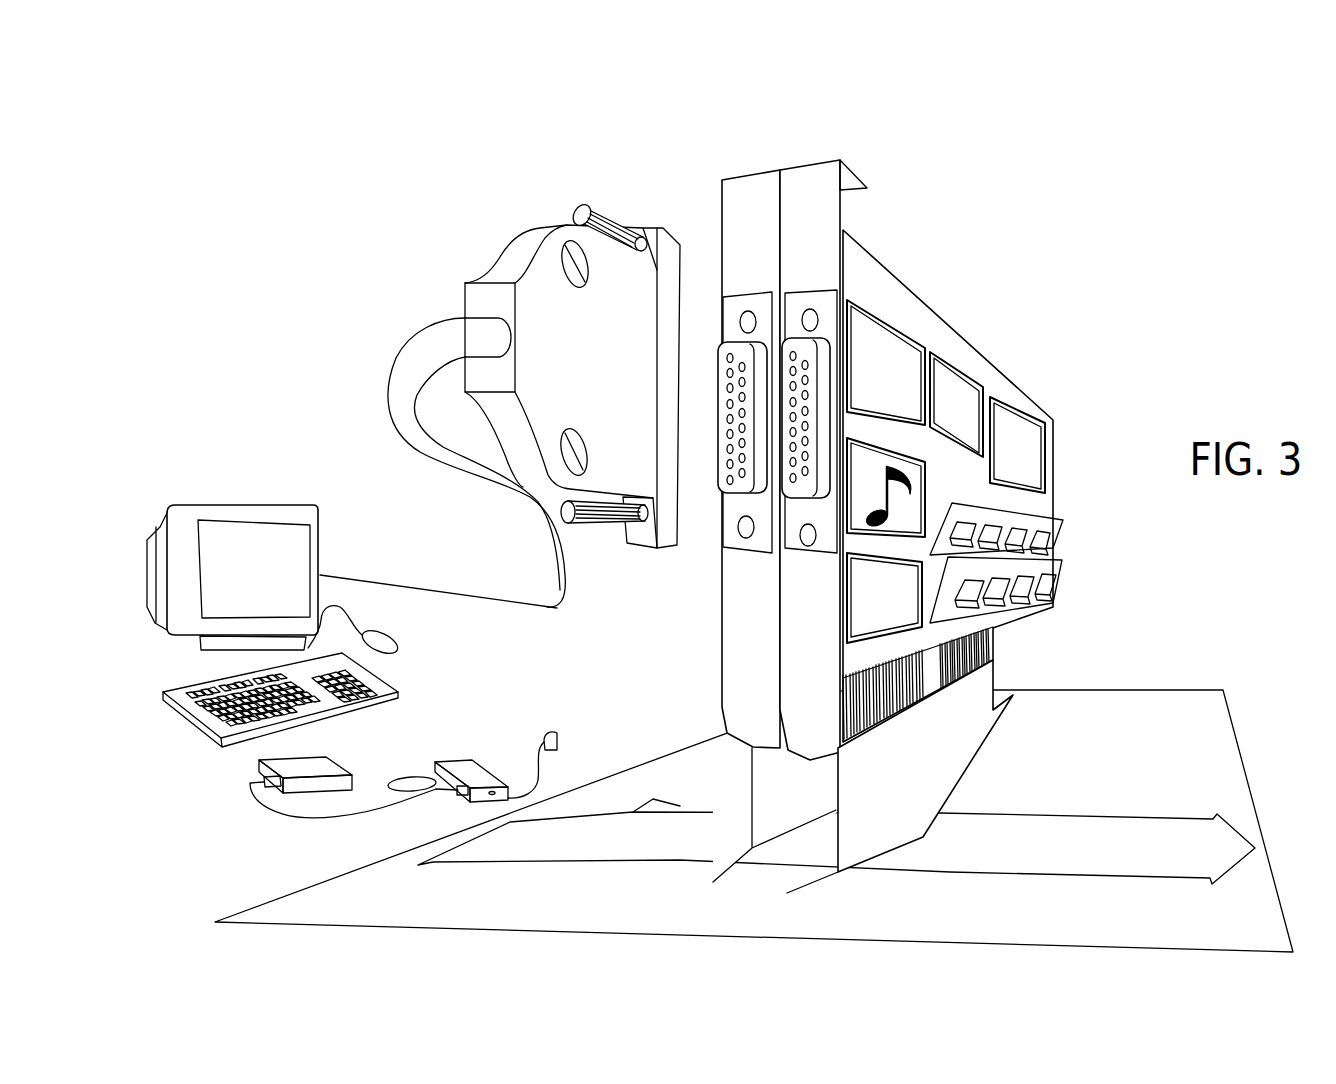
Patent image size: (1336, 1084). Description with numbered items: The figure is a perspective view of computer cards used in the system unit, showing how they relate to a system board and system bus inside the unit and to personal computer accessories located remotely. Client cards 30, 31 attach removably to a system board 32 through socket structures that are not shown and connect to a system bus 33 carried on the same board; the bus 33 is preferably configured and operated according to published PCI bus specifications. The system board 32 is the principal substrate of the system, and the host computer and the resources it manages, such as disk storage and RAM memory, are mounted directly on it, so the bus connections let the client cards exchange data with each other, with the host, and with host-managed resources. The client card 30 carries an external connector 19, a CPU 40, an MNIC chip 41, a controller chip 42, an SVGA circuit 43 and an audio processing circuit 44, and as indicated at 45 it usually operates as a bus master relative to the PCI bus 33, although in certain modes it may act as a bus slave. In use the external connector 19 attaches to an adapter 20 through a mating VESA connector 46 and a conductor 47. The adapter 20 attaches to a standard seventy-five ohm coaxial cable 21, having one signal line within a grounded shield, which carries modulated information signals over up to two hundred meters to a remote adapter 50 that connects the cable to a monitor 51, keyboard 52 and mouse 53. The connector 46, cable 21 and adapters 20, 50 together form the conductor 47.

The external connector 19 is at (800, 310).
The adapter 20 is at (460, 800).
The coaxial cable 21 is at (277, 810).
The client card 30 is at (817, 160).
The client card 31 is at (758, 173).
The system board 32 is at (1197, 710).
The system bus 33 is at (1067, 823).
The CPU 40 is at (1040, 443).
The MNIC chip 41 is at (852, 613).
The controller chip 42 is at (973, 387).
The SVGA circuit 43 is at (920, 353).
The audio processing circuit 44 is at (863, 503).
The bus master operation indication 45 is at (1022, 682).
The VESA connector 46 is at (557, 737).
The conductor 47 is at (403, 365).
The remote adapter 50 is at (323, 763).
The monitor 51 is at (256, 512).
The keyboard 52 is at (405, 690).
The mouse 53 is at (398, 642).